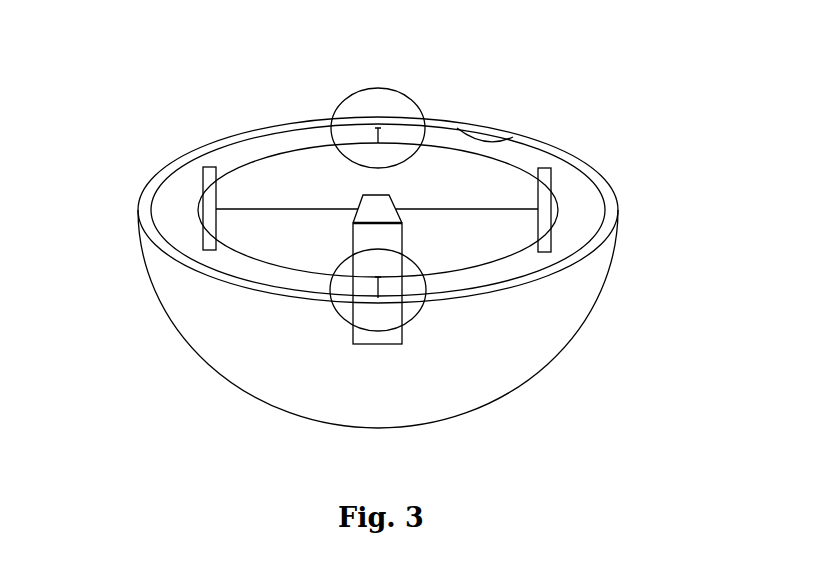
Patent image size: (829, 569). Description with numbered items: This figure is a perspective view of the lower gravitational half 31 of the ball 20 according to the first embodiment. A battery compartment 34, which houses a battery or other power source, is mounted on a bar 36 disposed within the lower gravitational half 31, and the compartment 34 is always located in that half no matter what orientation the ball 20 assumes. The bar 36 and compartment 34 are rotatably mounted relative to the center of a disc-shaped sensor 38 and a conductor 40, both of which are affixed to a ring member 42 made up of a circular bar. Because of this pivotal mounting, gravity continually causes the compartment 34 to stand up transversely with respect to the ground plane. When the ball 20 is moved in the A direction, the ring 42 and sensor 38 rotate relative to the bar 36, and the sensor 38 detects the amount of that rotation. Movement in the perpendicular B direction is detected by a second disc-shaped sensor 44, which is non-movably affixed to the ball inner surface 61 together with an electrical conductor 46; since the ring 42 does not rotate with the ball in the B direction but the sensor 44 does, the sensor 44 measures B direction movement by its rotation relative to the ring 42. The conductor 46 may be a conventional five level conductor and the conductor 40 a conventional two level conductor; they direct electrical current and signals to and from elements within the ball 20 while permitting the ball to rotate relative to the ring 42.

The ball 20 is at (102, 112).
The lower gravitational half 31 is at (128, 344).
The conductor 40 is at (580, 155).
The ring member 42 is at (513, 170).
The ball inner surface 61 is at (525, 155).
The sensor 38 is at (210, 178).
The bar 36 is at (281, 208).
The battery compartment 34 is at (374, 235).
The sensor 44 is at (378, 100).
The electrical conductor 46 is at (417, 285).